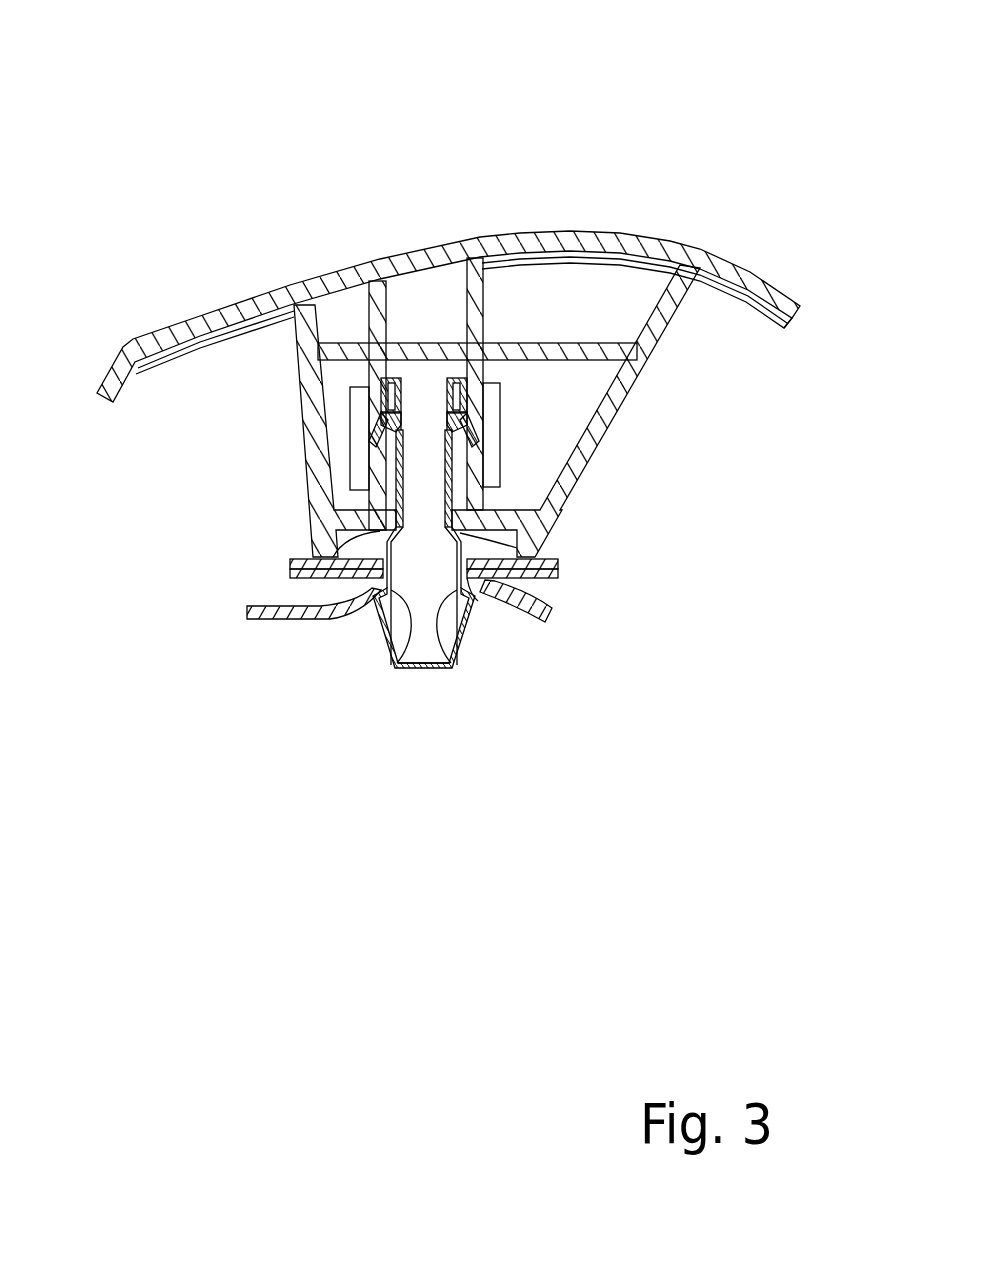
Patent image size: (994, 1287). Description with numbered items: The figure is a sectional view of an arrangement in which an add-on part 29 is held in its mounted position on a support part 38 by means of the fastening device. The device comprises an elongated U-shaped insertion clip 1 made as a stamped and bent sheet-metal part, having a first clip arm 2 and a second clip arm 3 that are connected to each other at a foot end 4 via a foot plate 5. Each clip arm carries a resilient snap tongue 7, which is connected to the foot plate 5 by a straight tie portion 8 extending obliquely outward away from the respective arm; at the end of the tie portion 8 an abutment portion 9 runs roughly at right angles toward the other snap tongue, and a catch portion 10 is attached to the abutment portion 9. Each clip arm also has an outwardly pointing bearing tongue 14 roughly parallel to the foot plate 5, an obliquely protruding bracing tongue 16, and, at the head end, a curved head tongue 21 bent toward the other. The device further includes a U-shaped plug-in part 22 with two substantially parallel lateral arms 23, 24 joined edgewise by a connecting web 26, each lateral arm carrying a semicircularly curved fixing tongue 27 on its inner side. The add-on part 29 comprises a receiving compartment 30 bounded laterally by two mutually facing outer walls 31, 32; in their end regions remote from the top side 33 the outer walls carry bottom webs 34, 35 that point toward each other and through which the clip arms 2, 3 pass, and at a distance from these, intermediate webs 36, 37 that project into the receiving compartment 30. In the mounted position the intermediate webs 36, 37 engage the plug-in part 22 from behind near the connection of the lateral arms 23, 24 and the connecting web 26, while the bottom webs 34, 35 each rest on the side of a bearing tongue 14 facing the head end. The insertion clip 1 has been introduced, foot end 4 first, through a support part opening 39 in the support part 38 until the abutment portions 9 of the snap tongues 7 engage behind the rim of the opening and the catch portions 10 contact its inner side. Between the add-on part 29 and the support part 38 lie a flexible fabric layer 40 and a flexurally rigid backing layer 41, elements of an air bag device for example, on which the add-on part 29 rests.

The insertion clip 1 is at (365, 717).
The first clip arm 2 is at (405, 455).
The second clip arm 3 is at (455, 474).
The foot end 4 is at (367, 710).
The foot plate 5 is at (430, 675).
The snap tongue 7 is at (347, 622).
The tie portion 8 is at (363, 636).
The abutment portion 9 is at (345, 610).
The catch portion 10 is at (400, 670).
The bearing tongue 14 is at (330, 583).
The bracing tongue 16 is at (423, 373).
The head tongue 21 is at (318, 292).
The plug-in part 22 is at (398, 380).
The lateral arm 23 is at (381, 392).
The lateral arm 24 is at (470, 380).
The connecting web 26 is at (397, 480).
The fixing tongue 27 is at (408, 385).
The add-on part 29 is at (448, 205).
The receiving compartment 30 is at (410, 420).
The outer wall 31 is at (367, 383).
The outer wall 32 is at (612, 250).
The top side 33 is at (548, 236).
The bottom web 34 is at (390, 500).
The bottom web 35 is at (460, 505).
The intermediate web 36 is at (405, 457).
The intermediate web 37 is at (472, 458).
The support part 38 is at (540, 625).
The support part opening 39 is at (380, 600).
The flexible fabric layer 40 is at (557, 566).
The flexurally rigid backing layer 41 is at (552, 594).